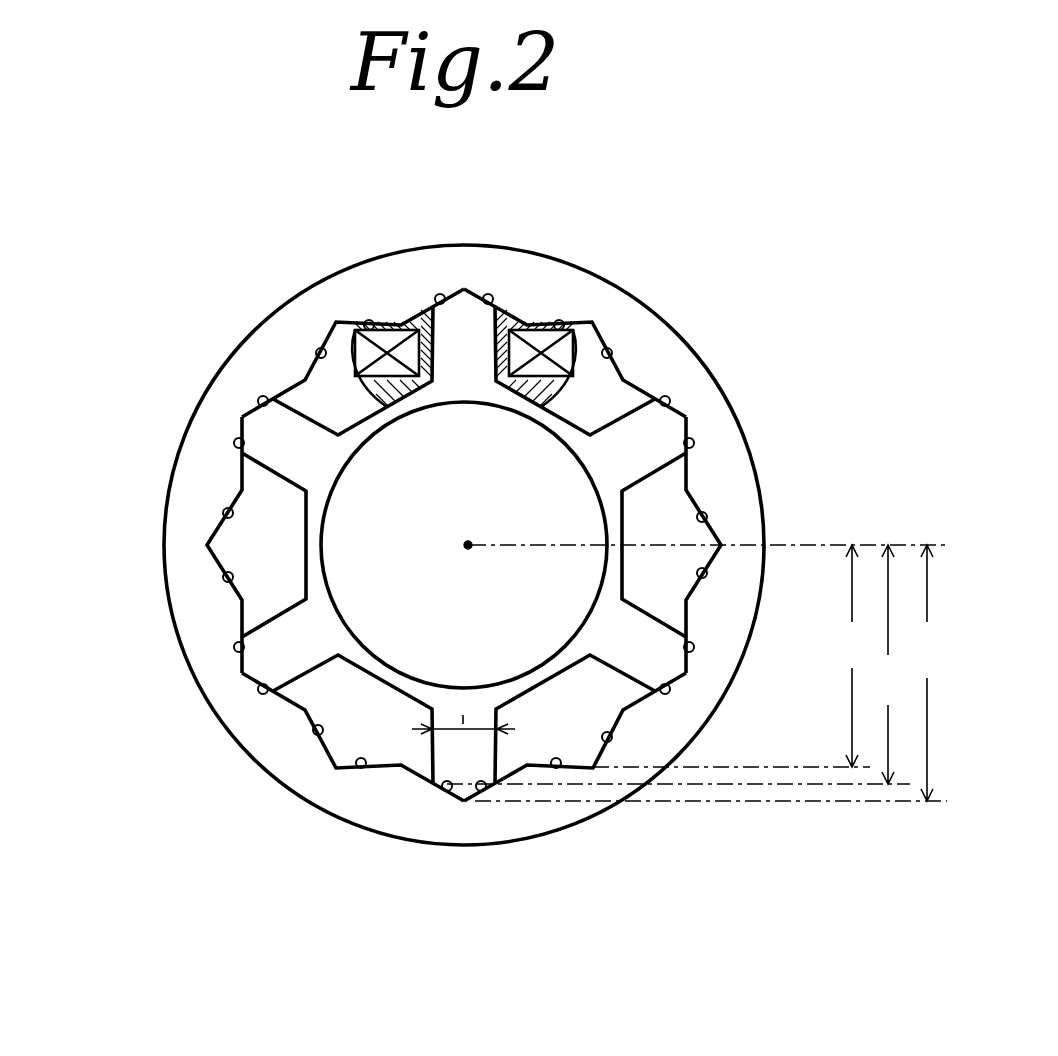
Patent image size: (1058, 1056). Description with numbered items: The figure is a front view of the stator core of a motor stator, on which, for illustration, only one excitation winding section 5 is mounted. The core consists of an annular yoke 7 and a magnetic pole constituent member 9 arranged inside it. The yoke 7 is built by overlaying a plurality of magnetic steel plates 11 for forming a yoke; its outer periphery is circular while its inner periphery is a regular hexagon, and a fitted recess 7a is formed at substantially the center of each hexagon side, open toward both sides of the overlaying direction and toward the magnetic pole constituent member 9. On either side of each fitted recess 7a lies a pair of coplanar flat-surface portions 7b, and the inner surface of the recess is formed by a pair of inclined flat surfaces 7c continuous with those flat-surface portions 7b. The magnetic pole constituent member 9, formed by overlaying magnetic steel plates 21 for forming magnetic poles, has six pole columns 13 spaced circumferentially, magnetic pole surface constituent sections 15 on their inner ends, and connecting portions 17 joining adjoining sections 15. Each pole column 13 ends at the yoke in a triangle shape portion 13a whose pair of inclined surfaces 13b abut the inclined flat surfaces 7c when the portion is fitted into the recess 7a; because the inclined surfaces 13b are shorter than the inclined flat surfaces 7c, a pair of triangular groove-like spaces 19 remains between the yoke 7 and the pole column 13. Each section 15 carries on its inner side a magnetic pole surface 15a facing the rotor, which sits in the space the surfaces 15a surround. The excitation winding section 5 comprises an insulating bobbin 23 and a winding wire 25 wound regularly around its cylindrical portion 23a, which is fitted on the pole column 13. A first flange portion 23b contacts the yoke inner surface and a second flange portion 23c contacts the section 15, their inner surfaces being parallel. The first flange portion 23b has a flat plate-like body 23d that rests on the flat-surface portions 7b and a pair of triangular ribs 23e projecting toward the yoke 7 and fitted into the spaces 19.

The excitation winding section 5 is at (352, 360).
The annular yoke 7 is at (190, 556).
The fitted recess 7a is at (462, 289).
The flat-surface portion 7b is at (366, 323).
The inclined flat surface 7c is at (425, 312).
The magnetic pole constituent member 9 is at (246, 468).
The magnetic steel plate for forming a yoke 11 is at (220, 572).
The pole column 13 is at (582, 333).
The triangle shape portion 13a is at (472, 290).
The inclined surface 13b is at (452, 297).
The magnetic pole surface constituent section 15 is at (457, 402).
The magnetic pole surface 15a is at (478, 404).
The connecting portion 17 is at (382, 430).
The groove-like space 19 is at (422, 325).
The magnetic steel plate for forming magnetic poles 21 is at (240, 488).
The bobbin 23 is at (364, 384).
The cylindrical portion 23a is at (355, 338).
The first flange portion 23b is at (340, 330).
The second flange portion 23c is at (262, 400).
The flat plate-like body 23d is at (375, 330).
The rib 23e is at (390, 330).
The winding wire 25 is at (352, 345).